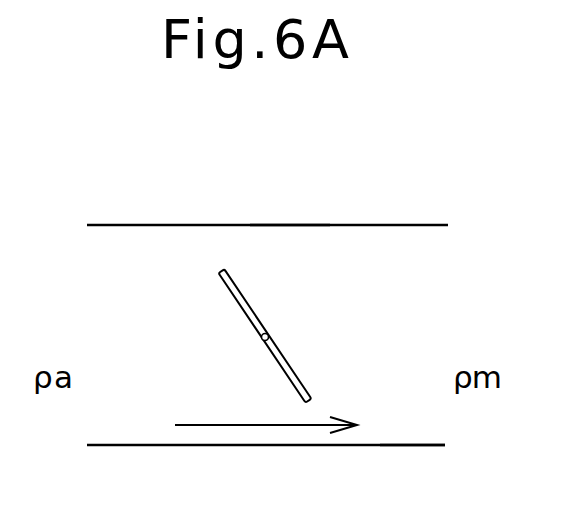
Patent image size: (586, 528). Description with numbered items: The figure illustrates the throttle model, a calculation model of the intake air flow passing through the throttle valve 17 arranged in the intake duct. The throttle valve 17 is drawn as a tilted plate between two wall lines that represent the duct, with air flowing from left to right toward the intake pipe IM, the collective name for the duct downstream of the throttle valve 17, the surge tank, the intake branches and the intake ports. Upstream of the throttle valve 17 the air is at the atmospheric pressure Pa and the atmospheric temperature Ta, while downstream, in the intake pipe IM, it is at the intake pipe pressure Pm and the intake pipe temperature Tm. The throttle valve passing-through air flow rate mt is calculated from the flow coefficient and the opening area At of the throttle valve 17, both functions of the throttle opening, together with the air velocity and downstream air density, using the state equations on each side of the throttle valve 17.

The throttle valve 17 is at (231, 277).
The throttle valve passing-through air flow rate mt is at (222, 425).
The intake pipe IM is at (405, 445).
The opening area of the throttle valve At is at (283, 258).
The atmospheric pressure Pa is at (53, 292).
The atmospheric temperature Ta is at (52, 335).
The intake pipe pressure Pm is at (477, 292).
The intake pipe temperature Tm is at (477, 335).